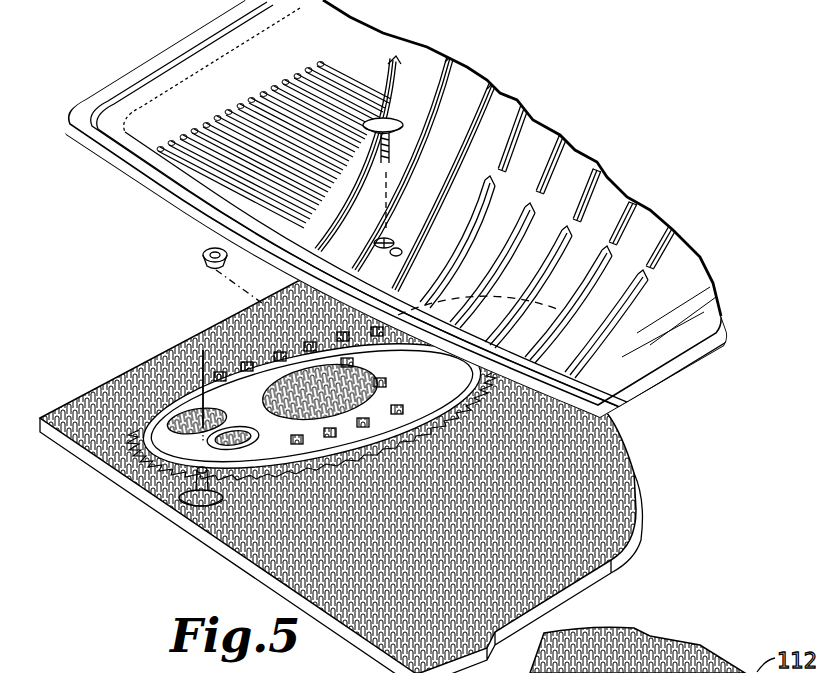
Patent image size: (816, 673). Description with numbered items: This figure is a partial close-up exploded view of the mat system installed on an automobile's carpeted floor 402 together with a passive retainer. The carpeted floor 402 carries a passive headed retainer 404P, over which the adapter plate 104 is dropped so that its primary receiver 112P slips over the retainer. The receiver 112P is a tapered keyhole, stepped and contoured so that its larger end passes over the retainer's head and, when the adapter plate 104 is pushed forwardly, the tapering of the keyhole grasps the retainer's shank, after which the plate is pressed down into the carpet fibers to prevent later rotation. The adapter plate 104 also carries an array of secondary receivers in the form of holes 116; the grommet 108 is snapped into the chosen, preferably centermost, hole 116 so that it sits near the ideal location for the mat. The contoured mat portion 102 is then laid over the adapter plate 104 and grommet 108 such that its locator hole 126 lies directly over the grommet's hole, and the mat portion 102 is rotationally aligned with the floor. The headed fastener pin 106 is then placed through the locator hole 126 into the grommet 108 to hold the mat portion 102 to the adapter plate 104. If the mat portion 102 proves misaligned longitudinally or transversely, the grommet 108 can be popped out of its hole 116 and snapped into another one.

The contoured mat portion 102 is at (585, 150).
The adapter plate 104 is at (189, 402).
The headed fastener pin 106 is at (403, 117).
The grommet 108 is at (200, 251).
The primary retainer receiver 112P is at (188, 402).
The secondary receivers 116 is at (431, 430).
The locator hole 126 is at (395, 240).
The carpeted floor 402 is at (632, 473).
The passive headed retainer 404P is at (173, 512).